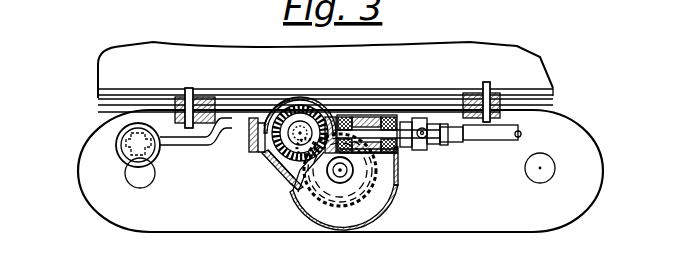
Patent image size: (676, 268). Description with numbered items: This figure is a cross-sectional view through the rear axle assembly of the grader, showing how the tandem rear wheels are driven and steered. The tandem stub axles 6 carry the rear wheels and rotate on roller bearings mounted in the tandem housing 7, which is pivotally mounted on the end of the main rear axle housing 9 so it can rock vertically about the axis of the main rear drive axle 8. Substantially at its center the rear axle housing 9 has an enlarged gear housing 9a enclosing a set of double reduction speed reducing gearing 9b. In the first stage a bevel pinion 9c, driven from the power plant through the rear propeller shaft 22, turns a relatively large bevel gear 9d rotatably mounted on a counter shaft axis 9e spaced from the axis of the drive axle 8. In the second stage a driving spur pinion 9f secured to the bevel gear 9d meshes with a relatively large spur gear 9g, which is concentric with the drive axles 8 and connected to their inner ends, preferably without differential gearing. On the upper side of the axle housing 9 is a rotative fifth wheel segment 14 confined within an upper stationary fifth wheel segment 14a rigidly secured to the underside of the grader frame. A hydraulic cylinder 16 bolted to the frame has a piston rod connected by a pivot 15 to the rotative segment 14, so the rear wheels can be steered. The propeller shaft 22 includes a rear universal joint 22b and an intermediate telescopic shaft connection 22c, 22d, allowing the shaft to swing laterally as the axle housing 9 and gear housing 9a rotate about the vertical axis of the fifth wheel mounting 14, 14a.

The stub axle 6 is at (127, 178).
The tandem housing 7 is at (233, 232).
The main rear drive axle 8 is at (337, 181).
The main rear axle housing 9 is at (357, 208).
The gear housing 9a is at (289, 98).
The double reduction speed reducing gearing 9b is at (273, 100).
The bevel pinion 9c is at (328, 100).
The bevel gear 9d is at (296, 134).
The counter shaft axis 9e is at (297, 146).
The driving spur pinion 9f is at (284, 165).
The spur gear 9g is at (289, 180).
The rotative fifth wheel segment 14 is at (462, 136).
The stationary fifth wheel segment 14a is at (500, 115).
The pivot 15 is at (140, 145).
The hydraulic cylinder 16 is at (117, 140).
The rear propeller shaft 22 is at (497, 141).
The rear universal joint 22b is at (418, 118).
The telescopic shaft connection 22c is at (451, 126).
The telescopic shaft connection 22d is at (521, 133).